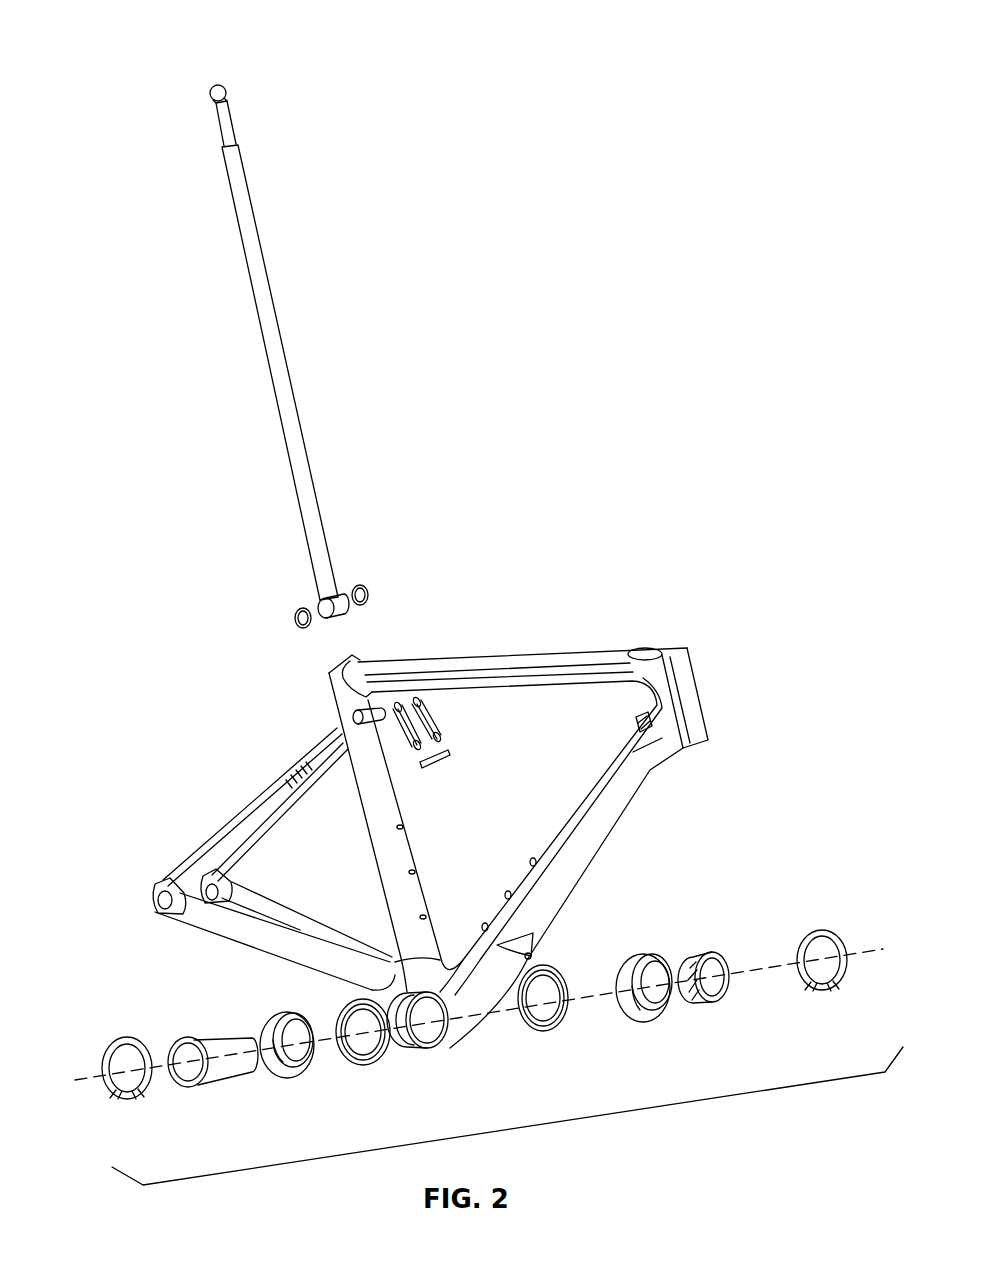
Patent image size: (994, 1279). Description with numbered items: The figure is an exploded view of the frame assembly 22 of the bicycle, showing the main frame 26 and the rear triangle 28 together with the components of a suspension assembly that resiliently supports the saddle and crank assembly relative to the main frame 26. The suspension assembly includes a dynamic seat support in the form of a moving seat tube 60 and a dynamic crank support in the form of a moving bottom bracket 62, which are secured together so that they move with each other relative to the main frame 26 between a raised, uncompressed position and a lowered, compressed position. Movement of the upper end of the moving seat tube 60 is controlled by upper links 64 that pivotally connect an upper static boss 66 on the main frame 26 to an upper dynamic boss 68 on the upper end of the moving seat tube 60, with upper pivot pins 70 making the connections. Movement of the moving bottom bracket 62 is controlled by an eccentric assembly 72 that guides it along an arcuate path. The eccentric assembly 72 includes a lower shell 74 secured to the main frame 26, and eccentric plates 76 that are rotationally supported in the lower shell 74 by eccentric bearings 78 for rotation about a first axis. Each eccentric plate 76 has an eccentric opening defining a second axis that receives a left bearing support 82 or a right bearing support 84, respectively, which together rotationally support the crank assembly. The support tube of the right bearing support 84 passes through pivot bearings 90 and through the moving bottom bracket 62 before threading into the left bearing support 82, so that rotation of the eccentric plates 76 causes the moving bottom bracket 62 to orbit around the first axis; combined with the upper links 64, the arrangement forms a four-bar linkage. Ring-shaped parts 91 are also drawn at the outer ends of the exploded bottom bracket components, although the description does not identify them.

The frame assembly 22 is at (548, 73).
The main frame 26 is at (478, 613).
The rear triangle 28 is at (208, 762).
The moving seat tube 60 is at (268, 256).
The moving bottom bracket 62 is at (322, 602).
The upper links 64 is at (438, 722).
The upper static boss 66 is at (353, 713).
The upper dynamic boss 68 is at (228, 166).
The upper pivot pins 70 is at (440, 768).
The eccentric assembly 72 is at (643, 1108).
The lower shell 74 is at (410, 1047).
The eccentric plates 76 is at (279, 1017).
The eccentric bearings 78 is at (378, 1068).
The left bearing support 82 is at (713, 955).
The right bearing support 84 is at (196, 1038).
The pivot bearings 90 is at (370, 592).
The retaining rings 91 is at (112, 1045).